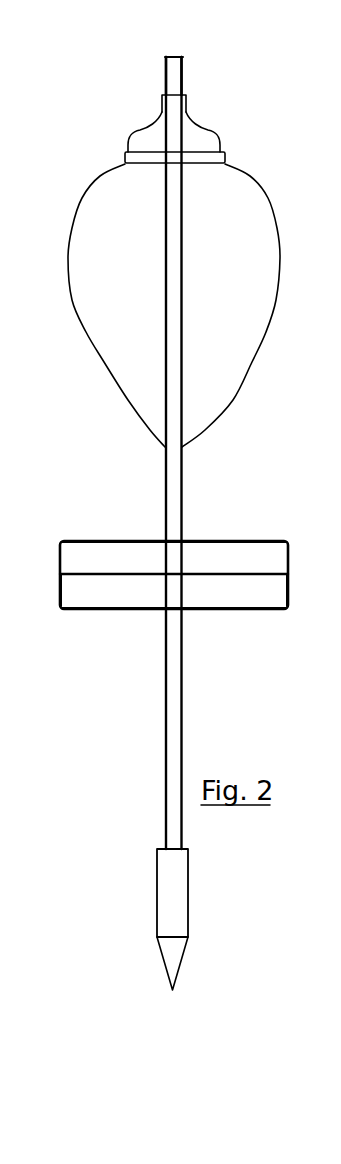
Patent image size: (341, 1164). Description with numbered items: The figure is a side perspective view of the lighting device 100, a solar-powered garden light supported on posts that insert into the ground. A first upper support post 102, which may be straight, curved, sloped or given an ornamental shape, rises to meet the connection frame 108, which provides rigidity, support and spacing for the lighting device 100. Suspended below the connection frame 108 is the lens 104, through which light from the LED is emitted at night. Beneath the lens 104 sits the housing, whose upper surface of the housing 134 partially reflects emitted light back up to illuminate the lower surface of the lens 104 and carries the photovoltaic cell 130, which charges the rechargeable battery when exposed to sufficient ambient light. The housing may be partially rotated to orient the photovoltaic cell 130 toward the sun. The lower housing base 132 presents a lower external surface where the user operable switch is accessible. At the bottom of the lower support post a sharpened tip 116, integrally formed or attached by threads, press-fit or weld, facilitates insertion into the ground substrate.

The lighting device 100 is at (78, 125).
The first upper support post 102 is at (168, 462).
The lens 104 is at (127, 182).
The connection frame 108 is at (168, 56).
The sharpened tip 116 is at (170, 922).
The photovoltaic cell 130 is at (72, 555).
The lower housing base 132 is at (263, 596).
The upper surface of the housing 134 is at (245, 547).